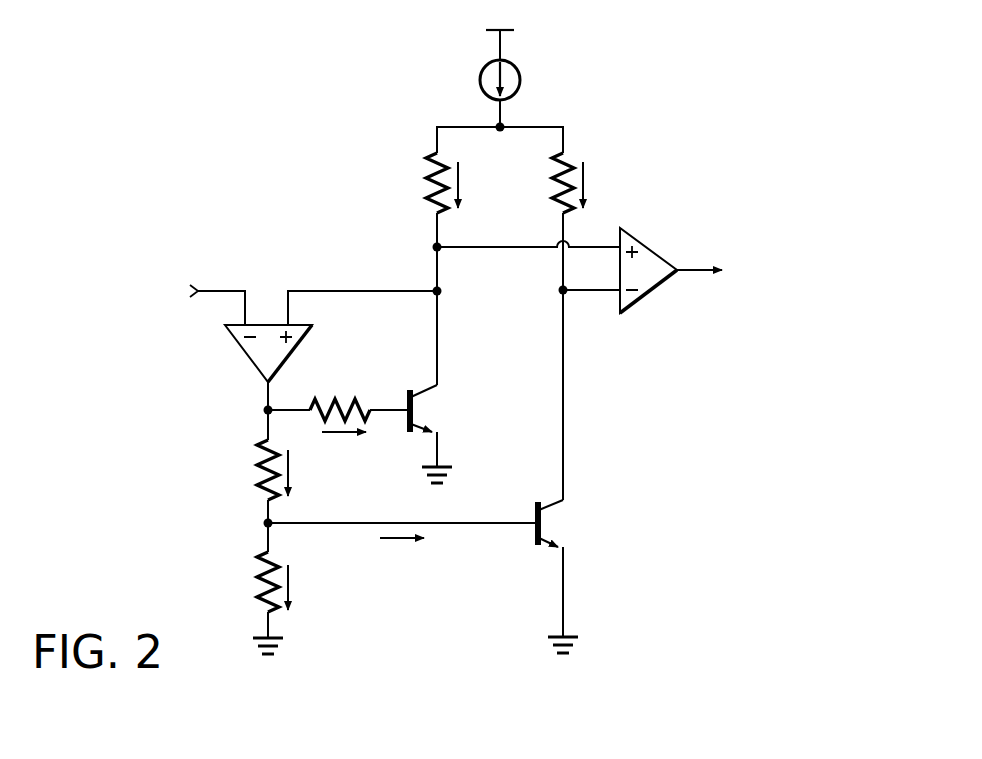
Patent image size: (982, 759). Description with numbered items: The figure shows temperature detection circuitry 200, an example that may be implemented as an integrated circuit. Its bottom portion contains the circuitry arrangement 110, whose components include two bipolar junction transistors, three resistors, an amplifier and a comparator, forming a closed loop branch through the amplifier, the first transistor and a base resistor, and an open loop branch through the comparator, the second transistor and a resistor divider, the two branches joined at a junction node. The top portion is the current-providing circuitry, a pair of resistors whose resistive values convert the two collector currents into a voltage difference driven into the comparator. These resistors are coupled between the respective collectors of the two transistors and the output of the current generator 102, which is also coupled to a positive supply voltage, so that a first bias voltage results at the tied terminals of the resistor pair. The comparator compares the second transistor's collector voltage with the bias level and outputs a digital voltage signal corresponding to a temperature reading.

The temperature detection circuitry 200 is at (672, 54).
The current generator 102 is at (523, 78).
The circuitry arrangement 110 is at (650, 420).